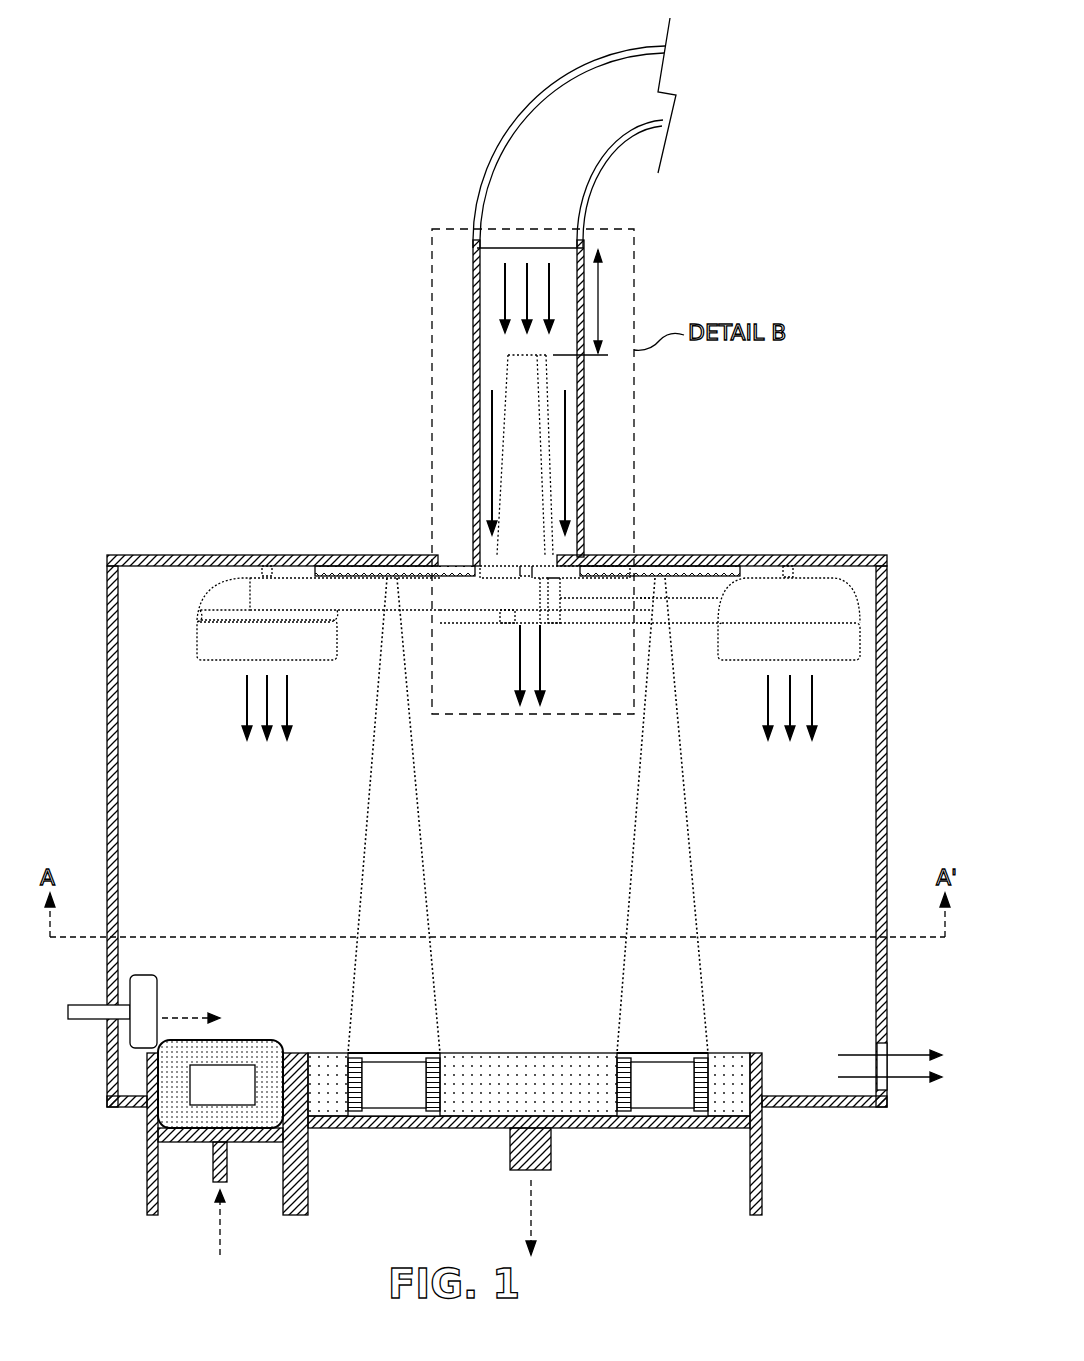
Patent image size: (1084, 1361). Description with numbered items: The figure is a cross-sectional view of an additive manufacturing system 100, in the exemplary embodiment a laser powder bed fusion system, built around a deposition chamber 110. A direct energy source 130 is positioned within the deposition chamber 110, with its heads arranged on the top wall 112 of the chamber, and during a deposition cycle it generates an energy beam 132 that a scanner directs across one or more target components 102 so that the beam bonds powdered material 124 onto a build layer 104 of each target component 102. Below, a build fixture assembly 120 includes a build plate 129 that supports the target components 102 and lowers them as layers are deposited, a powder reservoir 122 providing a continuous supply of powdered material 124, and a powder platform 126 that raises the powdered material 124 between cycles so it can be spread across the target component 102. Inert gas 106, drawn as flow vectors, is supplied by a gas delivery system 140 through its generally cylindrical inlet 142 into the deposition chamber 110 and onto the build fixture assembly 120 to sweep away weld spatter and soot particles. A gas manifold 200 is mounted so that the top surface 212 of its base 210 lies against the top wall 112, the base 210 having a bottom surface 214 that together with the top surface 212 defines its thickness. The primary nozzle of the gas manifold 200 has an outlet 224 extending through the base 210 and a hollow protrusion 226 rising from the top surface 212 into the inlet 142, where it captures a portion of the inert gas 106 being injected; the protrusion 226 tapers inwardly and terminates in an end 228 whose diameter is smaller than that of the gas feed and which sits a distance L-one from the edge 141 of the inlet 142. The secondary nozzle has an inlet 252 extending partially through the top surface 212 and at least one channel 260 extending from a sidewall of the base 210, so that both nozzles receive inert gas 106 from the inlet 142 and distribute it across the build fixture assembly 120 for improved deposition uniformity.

The additive manufacturing system 100 is at (235, 240).
The target component 102 is at (528, 1084).
The build layer 104 is at (390, 1053).
The inert gas 106 is at (503, 297).
The deposition chamber 110 is at (888, 622).
The top wall 112 is at (800, 556).
The build fixture assembly 120 is at (765, 1132).
The powder reservoir 122 is at (160, 1110).
The powdered material 124 is at (227, 1127).
The powder platform 126 is at (262, 1140).
The build plate 129 is at (600, 1128).
The direct energy source 130 is at (345, 566).
The energy beam 132 is at (420, 842).
The gas delivery system 140 is at (641, 108).
The edge 141 is at (578, 248).
The inlet 142 is at (583, 408).
The gas manifold 200 is at (232, 578).
The base 210 is at (575, 612).
The top surface 212 is at (480, 555).
The bottom surface 214 is at (545, 630).
The outlet 224 is at (510, 632).
The hollow protrusion 226 is at (510, 378).
The end 228 is at (528, 355).
The inlet 252 is at (562, 556).
The channel 260 is at (268, 566).